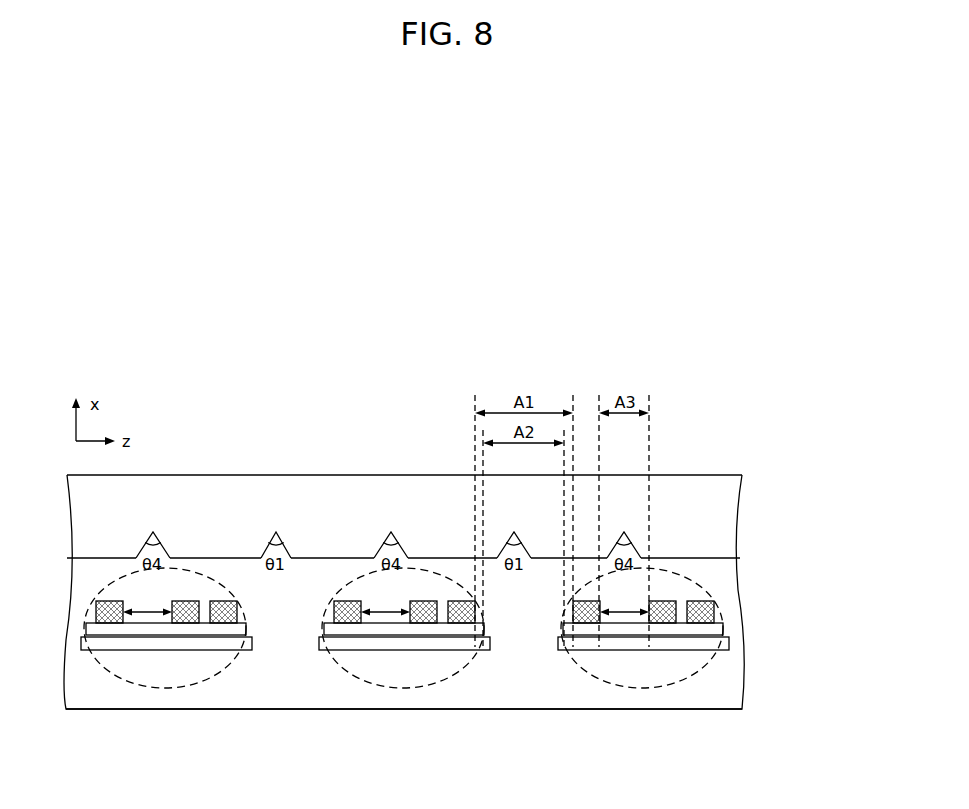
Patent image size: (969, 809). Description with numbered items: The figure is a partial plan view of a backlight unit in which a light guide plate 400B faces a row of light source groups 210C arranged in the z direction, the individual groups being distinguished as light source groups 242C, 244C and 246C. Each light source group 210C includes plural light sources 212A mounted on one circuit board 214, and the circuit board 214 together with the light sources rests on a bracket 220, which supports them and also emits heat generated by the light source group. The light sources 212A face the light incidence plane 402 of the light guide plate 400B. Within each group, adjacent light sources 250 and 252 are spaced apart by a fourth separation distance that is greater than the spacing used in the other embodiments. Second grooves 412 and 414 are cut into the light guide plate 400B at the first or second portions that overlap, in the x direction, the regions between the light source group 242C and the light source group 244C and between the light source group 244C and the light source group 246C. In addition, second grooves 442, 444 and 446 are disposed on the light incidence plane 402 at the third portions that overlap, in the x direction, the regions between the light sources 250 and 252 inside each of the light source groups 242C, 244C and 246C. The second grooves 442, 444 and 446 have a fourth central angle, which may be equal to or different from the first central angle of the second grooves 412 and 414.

The light guide plate 400B is at (444, 523).
The light incidence plane 402 is at (732, 553).
The second groove 412 is at (521, 542).
The second groove 414 is at (282, 541).
The second groove 442 is at (630, 541).
The second groove 444 is at (397, 541).
The second groove 446 is at (159, 541).
The light source group 210C is at (723, 681).
The light source 212A is at (697, 681).
The circuit board 214 is at (707, 630).
The bracket 220 is at (715, 645).
The light source 250 is at (730, 692).
The light source 252 is at (660, 617).
The light source group 242C is at (723, 669).
The light source group 244C is at (424, 688).
The light source group 246C is at (185, 688).